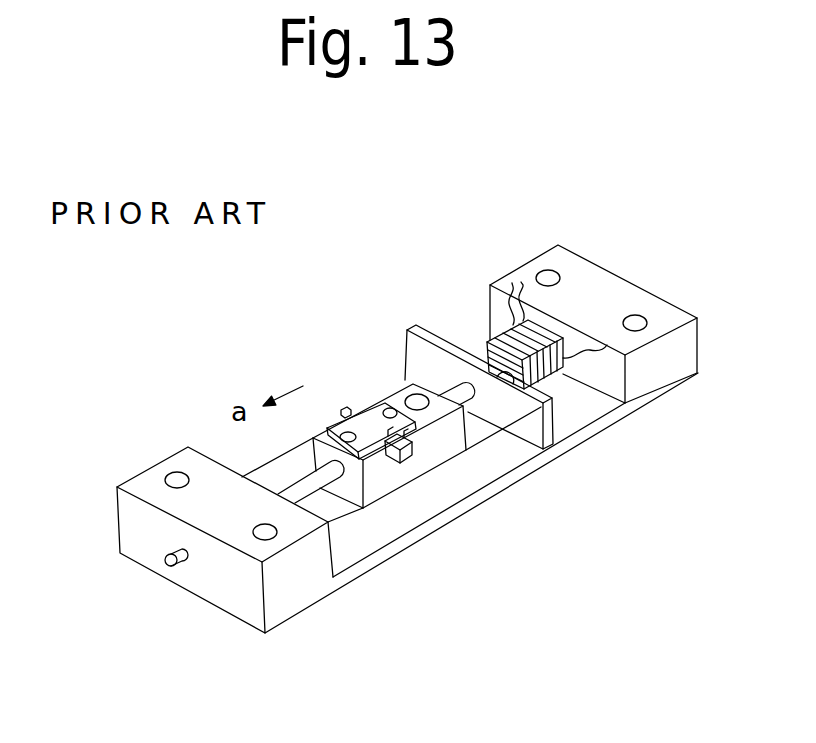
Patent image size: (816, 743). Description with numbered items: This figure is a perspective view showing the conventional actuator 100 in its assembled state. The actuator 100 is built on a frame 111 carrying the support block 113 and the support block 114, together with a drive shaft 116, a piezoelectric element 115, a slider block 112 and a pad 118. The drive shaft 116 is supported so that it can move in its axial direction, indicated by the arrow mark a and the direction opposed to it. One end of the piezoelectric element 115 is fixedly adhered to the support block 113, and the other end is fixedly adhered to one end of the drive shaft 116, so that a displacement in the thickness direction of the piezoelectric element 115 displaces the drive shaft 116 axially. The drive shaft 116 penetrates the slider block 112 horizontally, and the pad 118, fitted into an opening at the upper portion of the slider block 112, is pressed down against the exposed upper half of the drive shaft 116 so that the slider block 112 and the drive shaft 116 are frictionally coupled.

The actuator 100 is at (555, 485).
The frame 111 is at (490, 493).
The slider block 112 is at (392, 393).
The support block 113 is at (660, 380).
The support block 114 is at (307, 593).
The piezoelectric element 115 is at (492, 325).
The drive shaft 116 is at (185, 567).
The pad 118 is at (397, 455).